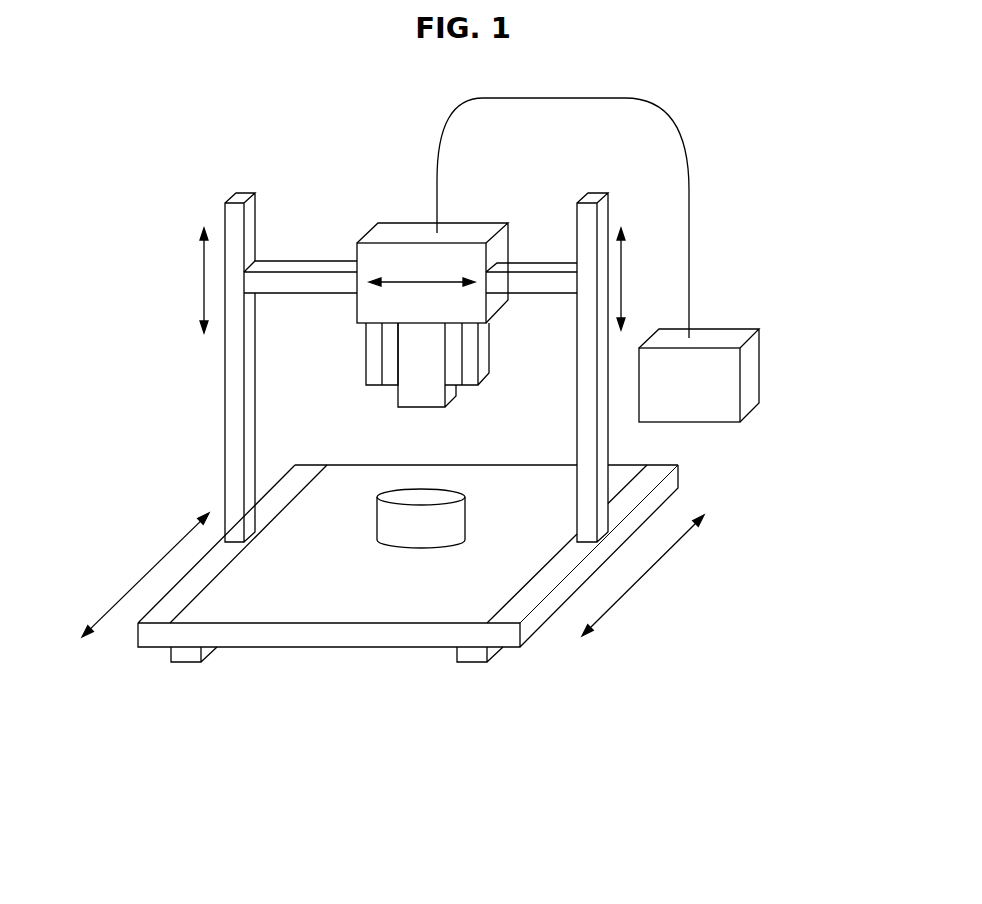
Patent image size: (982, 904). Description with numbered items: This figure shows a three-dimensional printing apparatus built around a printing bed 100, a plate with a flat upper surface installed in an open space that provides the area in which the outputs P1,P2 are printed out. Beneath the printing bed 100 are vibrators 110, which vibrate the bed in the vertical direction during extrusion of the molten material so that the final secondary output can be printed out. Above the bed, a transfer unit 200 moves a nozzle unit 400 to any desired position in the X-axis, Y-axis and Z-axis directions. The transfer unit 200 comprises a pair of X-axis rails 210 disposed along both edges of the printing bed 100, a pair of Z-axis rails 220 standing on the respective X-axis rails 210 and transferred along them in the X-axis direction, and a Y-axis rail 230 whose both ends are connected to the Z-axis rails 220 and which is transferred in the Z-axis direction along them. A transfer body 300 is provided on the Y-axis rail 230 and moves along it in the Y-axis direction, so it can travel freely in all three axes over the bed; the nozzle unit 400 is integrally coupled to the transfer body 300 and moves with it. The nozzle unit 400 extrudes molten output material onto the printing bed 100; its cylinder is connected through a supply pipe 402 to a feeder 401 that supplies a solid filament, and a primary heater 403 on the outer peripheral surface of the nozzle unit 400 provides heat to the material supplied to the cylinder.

The printing bed 100 is at (225, 592).
The vibrator 110 is at (185, 662).
The transfer unit 200 is at (492, 476).
The X-axis rails 210 is at (517, 612).
The Z-axis rails 220 is at (602, 443).
The Y-axis rail 230 is at (313, 268).
The transfer body 300 is at (398, 228).
The nozzle unit 400 is at (413, 392).
The feeder 401 is at (753, 367).
The supply pipe 402 is at (689, 232).
The primary heater 403 is at (375, 362).
The outputs P1,P2 is at (405, 538).